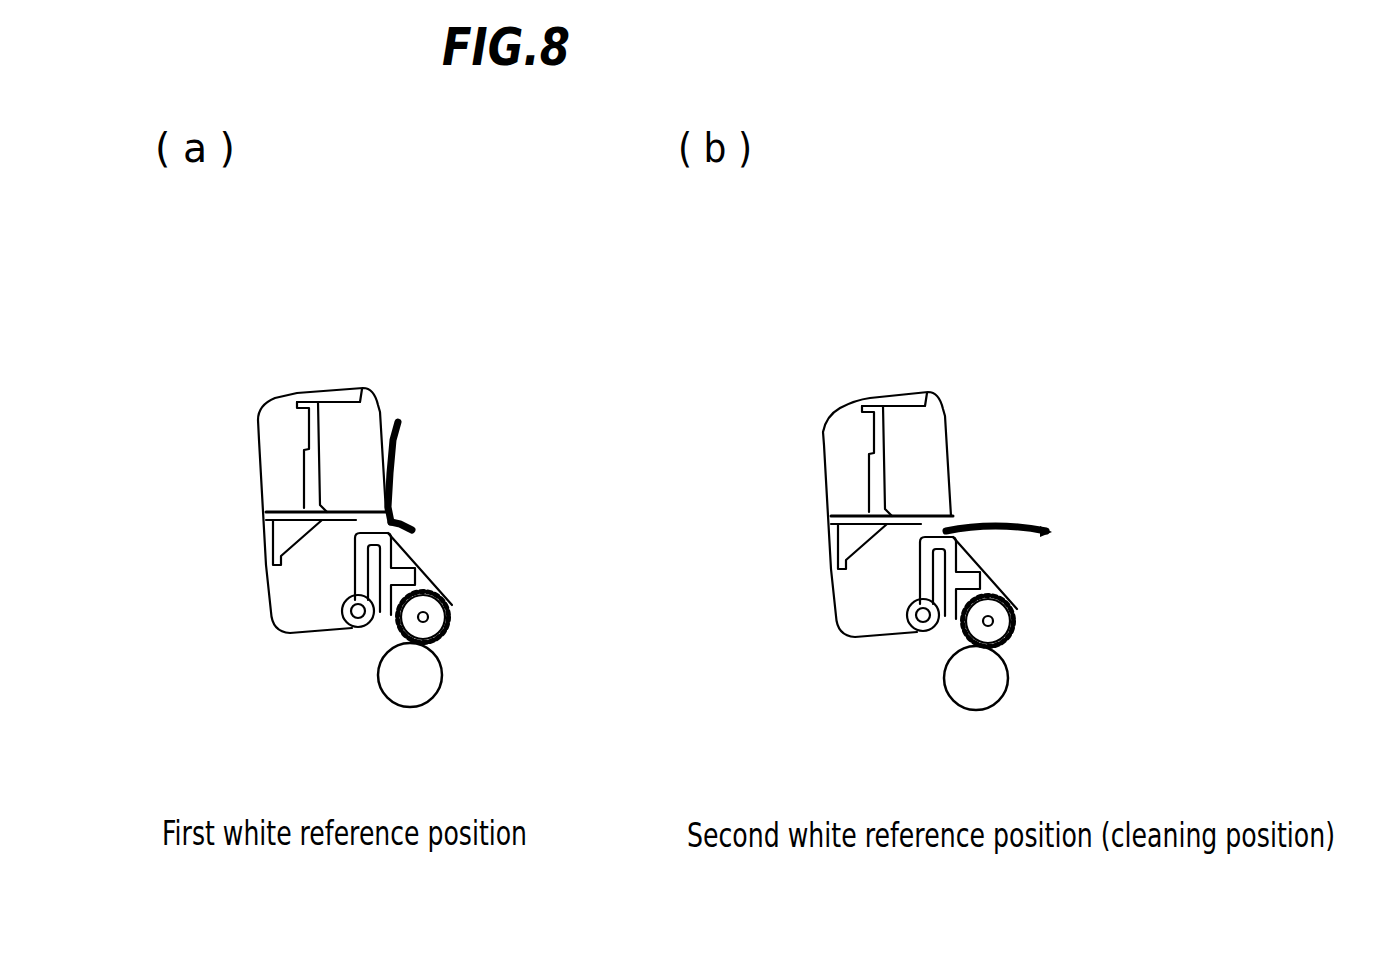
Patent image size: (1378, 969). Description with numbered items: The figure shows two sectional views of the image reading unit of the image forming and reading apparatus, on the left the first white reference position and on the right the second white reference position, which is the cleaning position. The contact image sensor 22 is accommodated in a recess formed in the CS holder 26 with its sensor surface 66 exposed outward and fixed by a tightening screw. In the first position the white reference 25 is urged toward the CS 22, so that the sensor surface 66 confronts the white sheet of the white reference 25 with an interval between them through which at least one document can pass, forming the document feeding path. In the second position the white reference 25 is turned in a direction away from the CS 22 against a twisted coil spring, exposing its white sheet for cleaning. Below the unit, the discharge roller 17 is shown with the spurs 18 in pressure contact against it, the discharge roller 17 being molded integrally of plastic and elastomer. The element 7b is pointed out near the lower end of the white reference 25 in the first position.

The CS holder 26 is at (282, 460).
The contact image sensor (CS) 22 is at (347, 437).
The sensor surface 66 is at (392, 463).
The white reference 25 is at (393, 477).
The cleaning member 7b is at (404, 528).
The spurs 18 is at (449, 626).
The discharge roller 17 is at (428, 678).